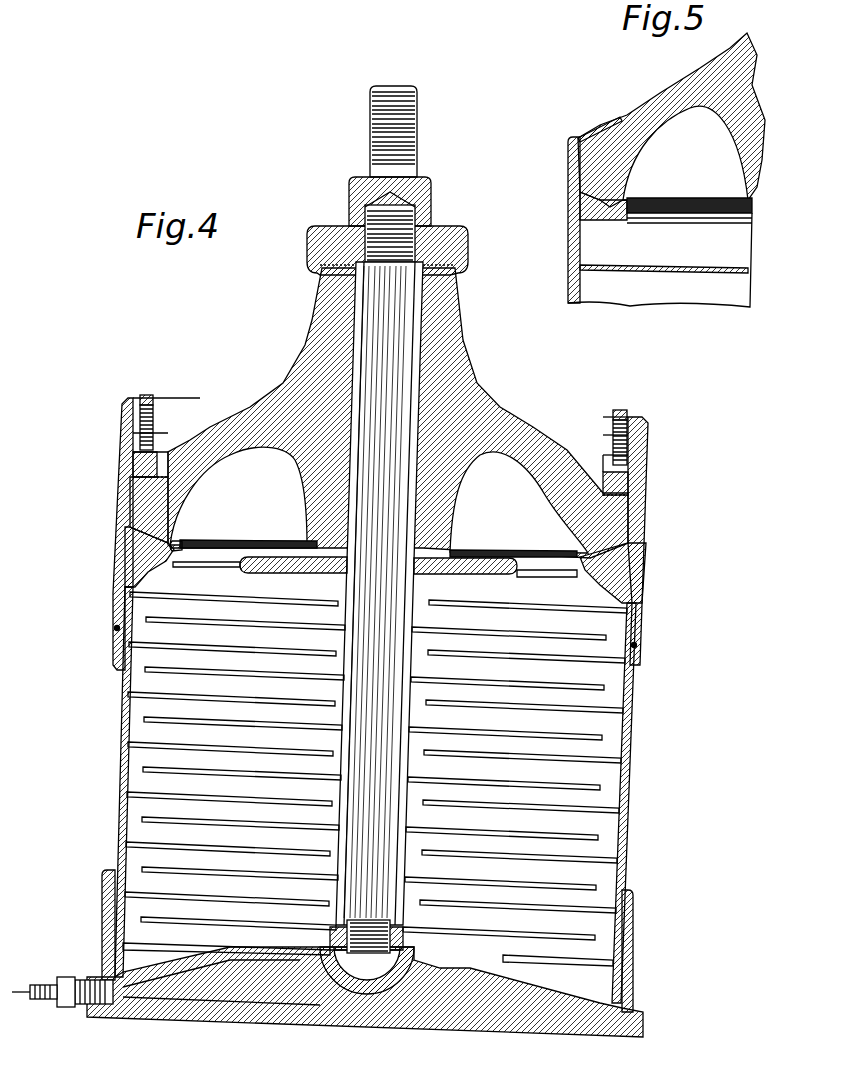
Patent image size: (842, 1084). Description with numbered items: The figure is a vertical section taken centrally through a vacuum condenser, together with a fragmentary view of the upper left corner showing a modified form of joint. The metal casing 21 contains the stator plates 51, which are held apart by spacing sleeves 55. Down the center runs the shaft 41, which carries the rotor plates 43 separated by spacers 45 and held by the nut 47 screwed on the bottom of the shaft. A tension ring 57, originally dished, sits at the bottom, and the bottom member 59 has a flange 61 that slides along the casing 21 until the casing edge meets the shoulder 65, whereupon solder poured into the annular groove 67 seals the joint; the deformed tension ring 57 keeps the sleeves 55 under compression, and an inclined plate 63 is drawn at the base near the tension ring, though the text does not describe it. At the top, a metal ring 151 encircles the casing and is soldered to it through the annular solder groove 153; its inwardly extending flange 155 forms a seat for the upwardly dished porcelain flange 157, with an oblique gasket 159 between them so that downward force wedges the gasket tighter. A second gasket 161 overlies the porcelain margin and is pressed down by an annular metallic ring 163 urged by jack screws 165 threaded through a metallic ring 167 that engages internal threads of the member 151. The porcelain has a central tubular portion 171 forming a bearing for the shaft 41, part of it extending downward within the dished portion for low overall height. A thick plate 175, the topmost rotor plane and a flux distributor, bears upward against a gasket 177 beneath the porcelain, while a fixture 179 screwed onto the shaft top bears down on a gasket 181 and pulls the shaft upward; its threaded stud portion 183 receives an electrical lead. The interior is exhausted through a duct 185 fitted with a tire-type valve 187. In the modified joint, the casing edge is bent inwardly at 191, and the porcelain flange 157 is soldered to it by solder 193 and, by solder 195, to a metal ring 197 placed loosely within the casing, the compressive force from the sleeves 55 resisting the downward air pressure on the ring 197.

In FIG. 4, the casing 21 is at (130, 758).
In FIG. 5, the casing 21 is at (568, 230).
In FIG. 4, the shaft 41 is at (410, 337).
In FIG. 4, the rotor plates 43 is at (595, 833).
In FIG. 4, the spacers 45 is at (405, 792).
In FIG. 4, the nut 47 is at (410, 940).
In FIG. 4, the stator plates 51 is at (143, 697).
In FIG. 5, the stator plates 51 is at (682, 273).
In FIG. 4, the spacing sleeves 55 is at (125, 815).
In FIG. 5, the spacing sleeves 55 is at (580, 268).
In FIG. 4, the tension ring 57 is at (150, 950).
In FIG. 4, the bottom member 59 is at (472, 966).
In FIG. 4, the flange 61 is at (105, 882).
In FIG. 4, the inclined conductor plate 63 is at (238, 950).
In FIG. 4, the shoulder 65 is at (97, 972).
In FIG. 4, the annular groove 67 is at (103, 923).
In FIG. 4, the metal ring 151 is at (115, 598).
In FIG. 4, the annular solder groove 153 is at (113, 632).
In FIG. 4, the inwardly extending flange 155 is at (607, 573).
In FIG. 4, the porcelain flange 157 is at (528, 428).
In FIG. 5, the porcelain flange 157 is at (693, 73).
In FIG. 4, the gasket 159 is at (640, 548).
In FIG. 4, the second gasket 161 is at (630, 487).
In FIG. 4, the annular metallic ring 163 is at (622, 478).
In FIG. 4, the jack screws 165 is at (148, 397).
In FIG. 4, the metallic ring 167 is at (607, 430).
In FIG. 4, the tubular portion 171 is at (452, 310).
In FIG. 4, the thick plate 175 is at (450, 550).
In FIG. 4, the gasket 177 is at (312, 545).
In FIG. 4, the fixture 179 is at (420, 207).
In FIG. 4, the gasket 181 is at (320, 273).
In FIG. 4, the threaded stud portion 183 is at (418, 126).
In FIG. 4, the duct 185 is at (262, 997).
In FIG. 4, the valve 187 is at (68, 995).
In FIG. 5, the inwardly bent flange 191 is at (593, 130).
In FIG. 5, the solder 193 is at (607, 117).
In FIG. 5, the solder 195 is at (580, 195).
In FIG. 5, the metal ring 197 is at (628, 218).